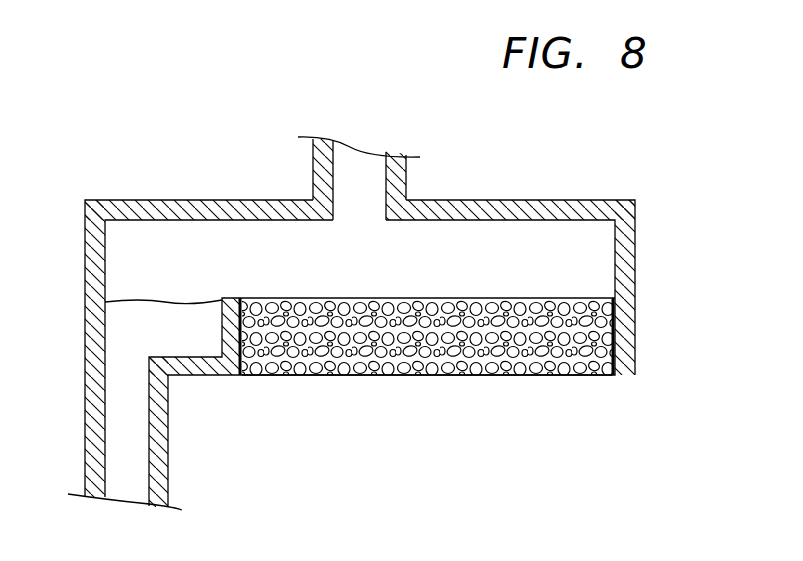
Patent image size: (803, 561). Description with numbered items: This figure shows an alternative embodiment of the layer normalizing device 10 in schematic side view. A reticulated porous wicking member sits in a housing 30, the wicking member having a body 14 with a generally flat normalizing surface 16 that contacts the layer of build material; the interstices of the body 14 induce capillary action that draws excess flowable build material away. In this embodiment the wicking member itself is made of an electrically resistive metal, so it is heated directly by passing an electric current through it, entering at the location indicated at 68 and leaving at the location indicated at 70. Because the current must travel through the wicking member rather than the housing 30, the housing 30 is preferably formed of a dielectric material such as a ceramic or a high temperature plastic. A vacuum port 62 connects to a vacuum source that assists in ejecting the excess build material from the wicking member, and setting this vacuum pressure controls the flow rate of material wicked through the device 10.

The layer normalizing device 10 is at (389, 274).
The housing 30 is at (245, 200).
The vacuum port 62 is at (360, 173).
The normalizing surface 16 is at (428, 378).
The body 14 is at (565, 378).
The starting location of electric current 68 is at (615, 335).
The ending location of electric current 70 is at (236, 365).